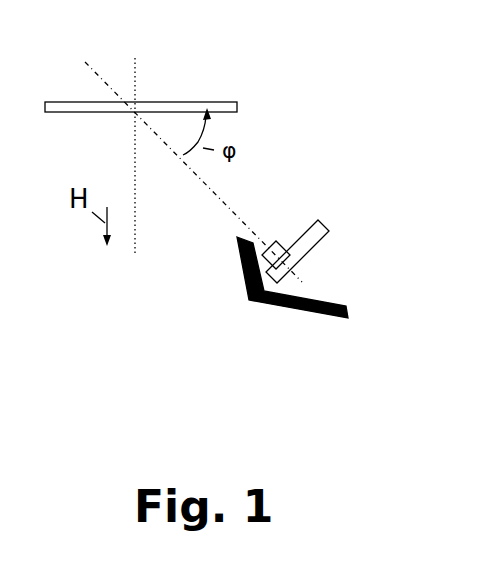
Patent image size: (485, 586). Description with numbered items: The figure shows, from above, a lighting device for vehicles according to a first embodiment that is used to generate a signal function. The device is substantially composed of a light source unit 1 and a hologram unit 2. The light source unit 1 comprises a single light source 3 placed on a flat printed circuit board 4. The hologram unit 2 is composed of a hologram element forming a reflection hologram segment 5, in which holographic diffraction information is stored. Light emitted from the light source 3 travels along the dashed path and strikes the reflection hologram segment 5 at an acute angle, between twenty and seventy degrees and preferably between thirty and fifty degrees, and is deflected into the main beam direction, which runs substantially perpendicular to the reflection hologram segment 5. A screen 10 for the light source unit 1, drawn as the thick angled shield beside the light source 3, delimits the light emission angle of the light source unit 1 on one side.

The light source unit 1 is at (358, 195).
The hologram unit 2 is at (266, 59).
The light source 3 is at (276, 241).
The printed circuit board 4 is at (310, 233).
The reflection hologram segment 5 is at (62, 110).
The screen 10 is at (312, 315).